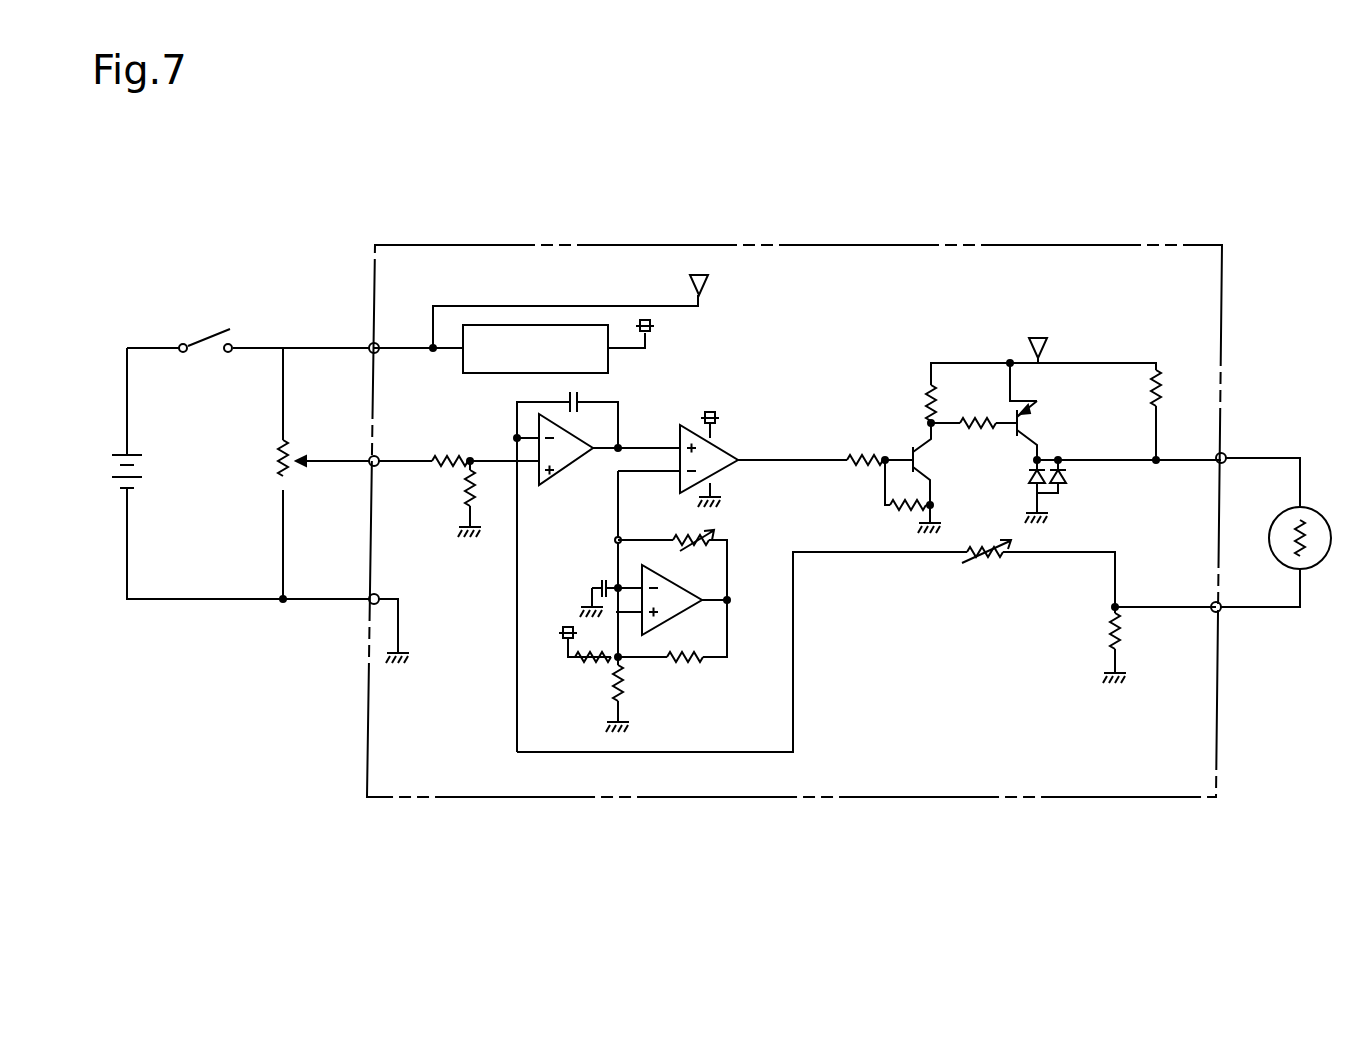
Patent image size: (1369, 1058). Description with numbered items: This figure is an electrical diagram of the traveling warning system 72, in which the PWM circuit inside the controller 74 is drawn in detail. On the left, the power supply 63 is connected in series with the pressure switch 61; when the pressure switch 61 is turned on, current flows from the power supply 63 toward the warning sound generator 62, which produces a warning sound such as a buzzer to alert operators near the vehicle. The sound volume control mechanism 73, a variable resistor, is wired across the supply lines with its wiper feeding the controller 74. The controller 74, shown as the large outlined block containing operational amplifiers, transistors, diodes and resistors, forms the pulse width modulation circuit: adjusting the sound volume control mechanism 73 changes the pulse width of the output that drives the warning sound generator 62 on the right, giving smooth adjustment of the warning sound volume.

The pressure switch 61 is at (201, 326).
The warning sound generator 62 is at (1318, 506).
The power supply 63 is at (142, 454).
The traveling warning system 72 is at (290, 816).
The sound volume control mechanism 73 is at (300, 496).
The controller 74 is at (831, 245).